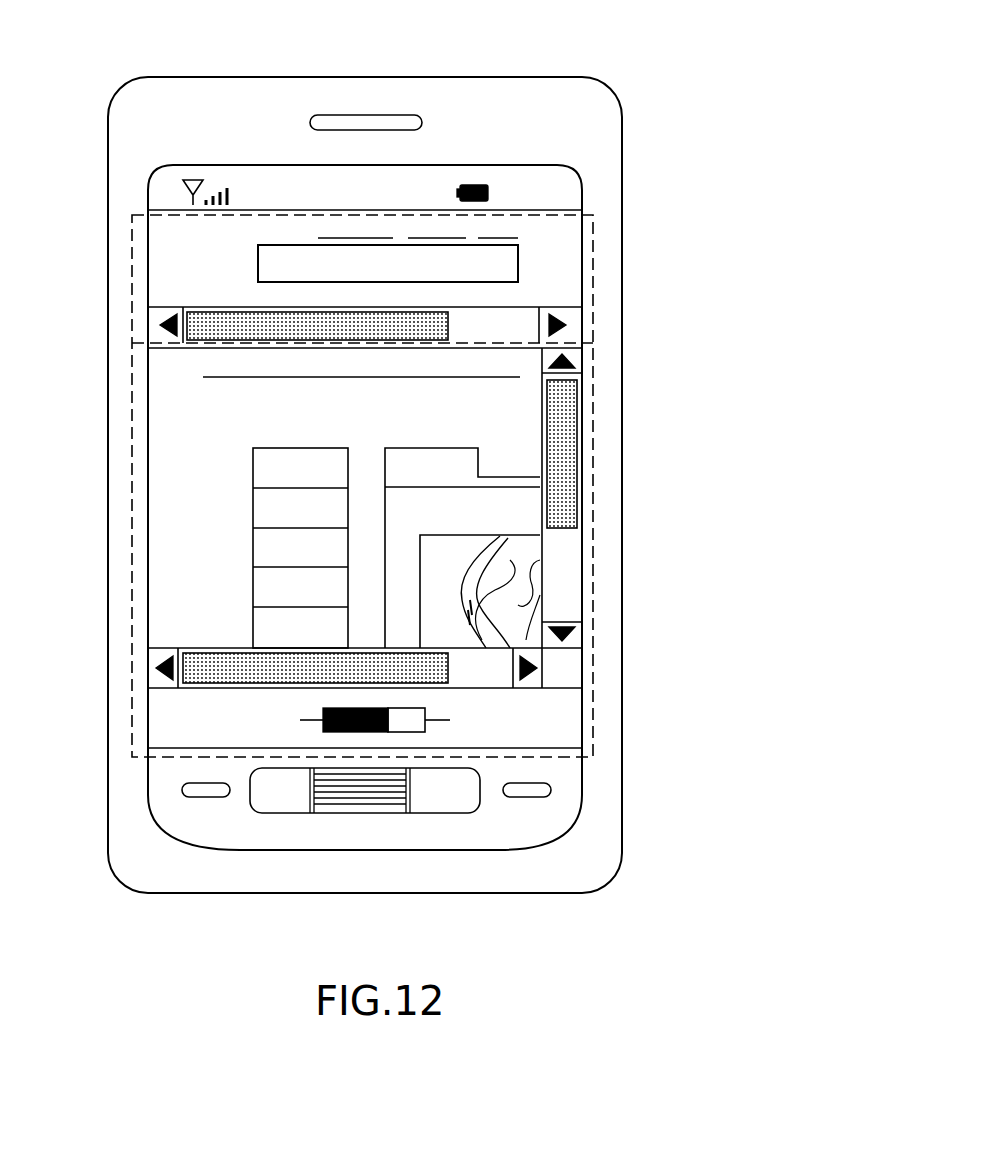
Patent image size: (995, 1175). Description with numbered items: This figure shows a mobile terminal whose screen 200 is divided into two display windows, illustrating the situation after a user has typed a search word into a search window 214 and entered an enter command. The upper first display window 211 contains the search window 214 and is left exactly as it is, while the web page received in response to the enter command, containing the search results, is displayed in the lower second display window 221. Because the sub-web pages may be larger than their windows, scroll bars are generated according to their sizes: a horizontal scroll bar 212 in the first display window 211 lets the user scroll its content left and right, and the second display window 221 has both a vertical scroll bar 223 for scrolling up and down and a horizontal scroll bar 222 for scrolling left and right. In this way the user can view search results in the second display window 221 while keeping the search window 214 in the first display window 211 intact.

The screen 200 is at (555, 160).
The first display window 211 is at (402, 470).
The horizontal scroll bar 212 is at (232, 332).
The search window 214 is at (526, 243).
The second display window 221 is at (454, 656).
The horizontal scroll bar 222 is at (275, 672).
The vertical scroll bar 223 is at (558, 408).